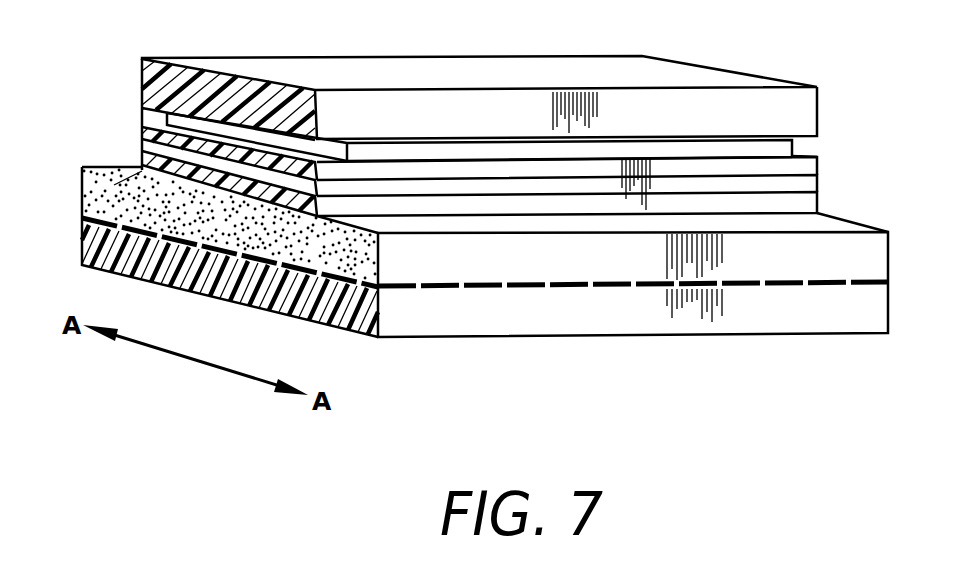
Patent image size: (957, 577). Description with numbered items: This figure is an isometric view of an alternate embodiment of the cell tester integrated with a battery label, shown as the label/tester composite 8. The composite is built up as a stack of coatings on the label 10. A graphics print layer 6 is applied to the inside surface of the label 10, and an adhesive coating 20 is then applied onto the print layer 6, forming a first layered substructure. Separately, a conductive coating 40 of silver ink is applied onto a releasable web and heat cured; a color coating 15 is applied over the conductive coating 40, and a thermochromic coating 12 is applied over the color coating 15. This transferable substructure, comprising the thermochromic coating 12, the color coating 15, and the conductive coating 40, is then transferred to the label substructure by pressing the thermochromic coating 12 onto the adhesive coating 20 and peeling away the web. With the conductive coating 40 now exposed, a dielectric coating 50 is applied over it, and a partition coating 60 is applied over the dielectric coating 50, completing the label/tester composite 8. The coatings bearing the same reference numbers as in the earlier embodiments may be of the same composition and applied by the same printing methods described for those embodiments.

The graphics print layer 6 is at (82, 215).
The label/tester composite 8 is at (613, 338).
The label 10 is at (82, 246).
The thermochromic coating 12 is at (84, 182).
The color coating 15 is at (142, 147).
The adhesive coating 20 is at (347, 262).
The conductive coating 40 is at (142, 130).
The dielectric coating 50 is at (167, 119).
The partition coating 60 is at (142, 80).